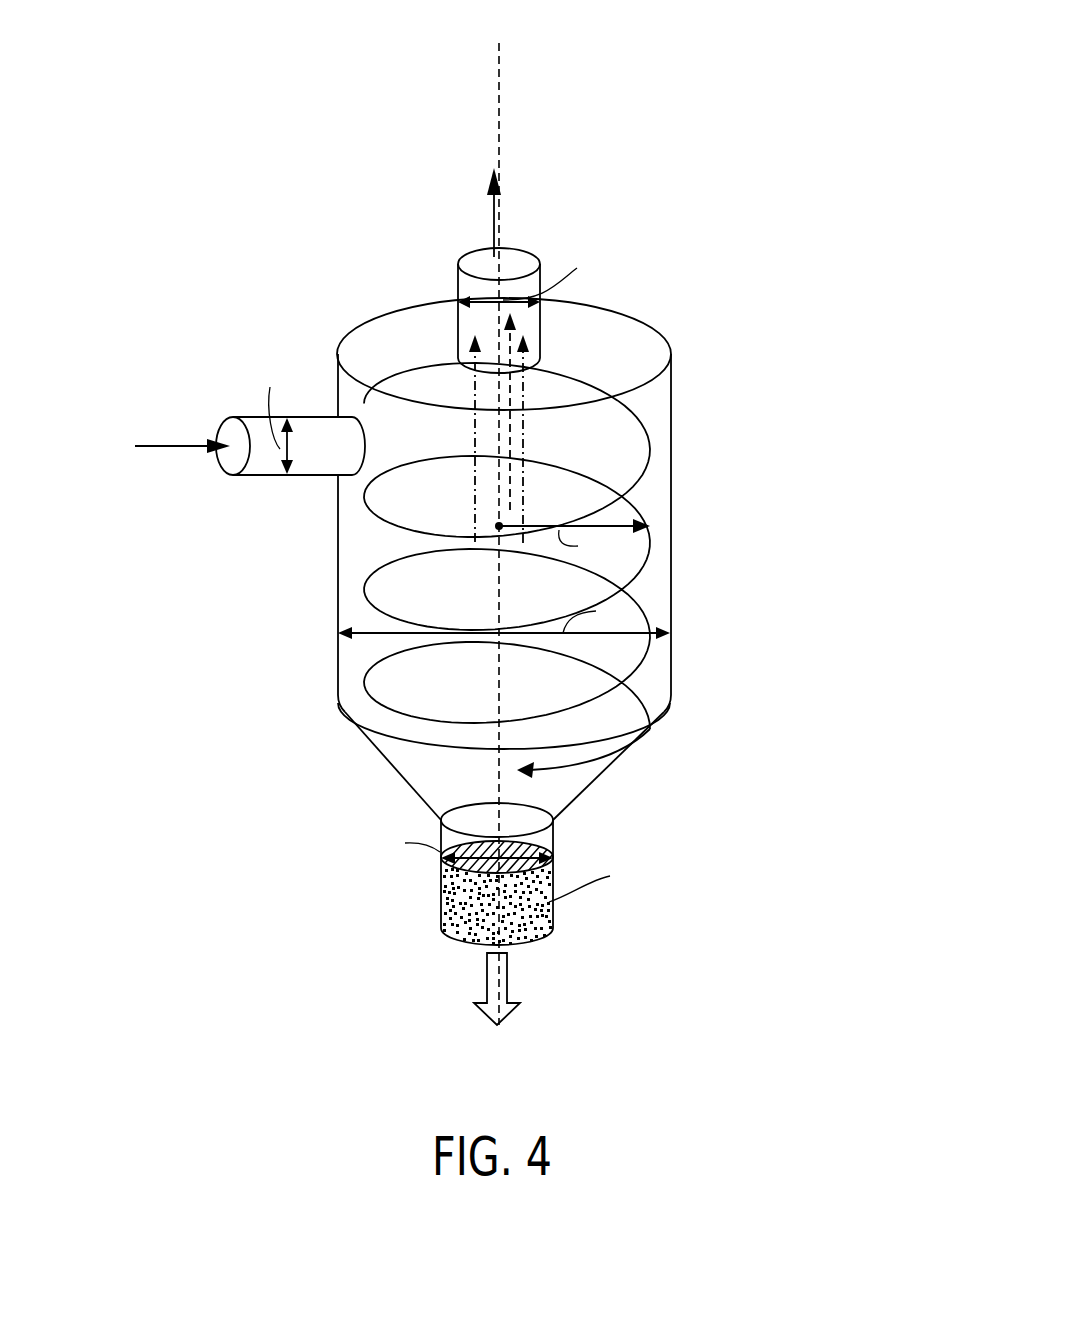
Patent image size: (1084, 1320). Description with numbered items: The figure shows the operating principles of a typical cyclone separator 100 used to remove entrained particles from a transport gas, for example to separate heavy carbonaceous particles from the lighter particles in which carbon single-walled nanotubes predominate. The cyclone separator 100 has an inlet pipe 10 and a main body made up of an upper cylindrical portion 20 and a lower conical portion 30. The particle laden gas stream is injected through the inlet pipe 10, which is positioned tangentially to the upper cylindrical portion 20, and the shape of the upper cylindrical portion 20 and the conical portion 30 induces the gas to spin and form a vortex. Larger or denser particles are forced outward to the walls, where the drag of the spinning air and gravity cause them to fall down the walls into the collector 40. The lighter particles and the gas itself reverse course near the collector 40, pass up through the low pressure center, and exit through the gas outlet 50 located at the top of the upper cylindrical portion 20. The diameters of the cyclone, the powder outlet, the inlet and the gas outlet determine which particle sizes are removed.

The cyclone separator 100 is at (837, 233).
The inlet pipe 10 is at (250, 417).
The upper cylindrical portion 20 is at (673, 528).
The lower conical portion 30 is at (626, 756).
The collector 40 is at (437, 910).
The gas outlet 50 is at (458, 284).